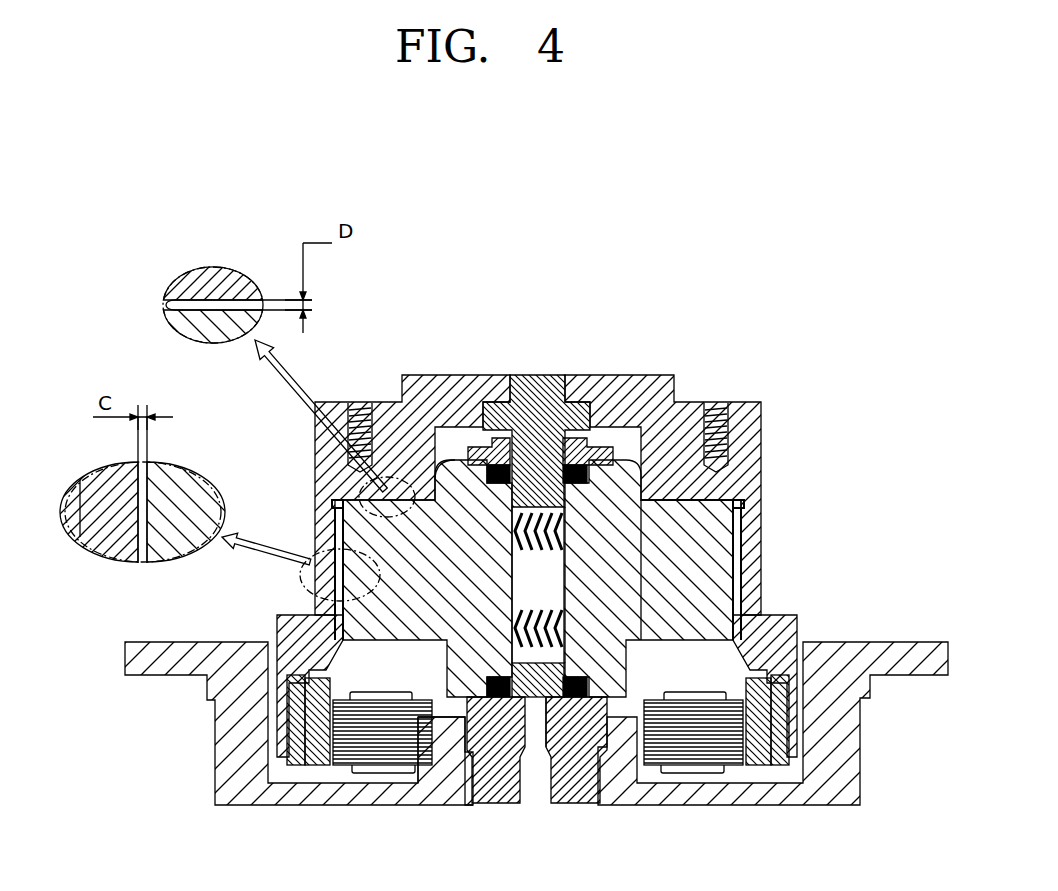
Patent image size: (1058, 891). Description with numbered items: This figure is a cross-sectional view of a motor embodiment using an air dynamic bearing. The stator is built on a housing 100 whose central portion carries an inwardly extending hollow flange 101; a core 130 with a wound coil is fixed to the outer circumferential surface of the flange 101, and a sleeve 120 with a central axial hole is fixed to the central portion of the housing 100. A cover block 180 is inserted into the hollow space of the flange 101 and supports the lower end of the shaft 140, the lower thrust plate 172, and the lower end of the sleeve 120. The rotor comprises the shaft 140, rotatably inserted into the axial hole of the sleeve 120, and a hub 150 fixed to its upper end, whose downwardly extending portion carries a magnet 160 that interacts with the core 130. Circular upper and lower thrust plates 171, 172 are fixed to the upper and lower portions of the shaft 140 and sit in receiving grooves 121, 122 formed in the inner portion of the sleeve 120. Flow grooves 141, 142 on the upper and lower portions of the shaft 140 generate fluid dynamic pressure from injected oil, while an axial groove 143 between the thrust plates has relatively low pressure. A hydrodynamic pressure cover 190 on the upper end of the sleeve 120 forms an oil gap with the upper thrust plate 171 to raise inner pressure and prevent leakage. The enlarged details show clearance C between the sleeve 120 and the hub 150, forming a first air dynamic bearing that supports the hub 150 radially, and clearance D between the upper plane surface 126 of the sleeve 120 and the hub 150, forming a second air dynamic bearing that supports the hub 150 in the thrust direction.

The housing 100 is at (860, 762).
The flange 101 is at (433, 807).
The sleeve 120 is at (200, 335).
The receiving groove 121 is at (437, 462).
The receiving groove 122 is at (487, 683).
The upper plane surface 126 is at (162, 303).
The core 130 is at (383, 748).
The shaft 140 is at (527, 374).
The flow groove 141 is at (547, 507).
The flow groove 142 is at (540, 655).
The axial groove 143 is at (673, 570).
The hub 150 is at (200, 266).
The magnet 160 is at (322, 768).
The upper thrust plate 171 is at (687, 478).
The lower thrust plate 172 is at (577, 680).
The cover block 180 is at (573, 805).
The hydrodynamic pressure cover 190 is at (610, 457).